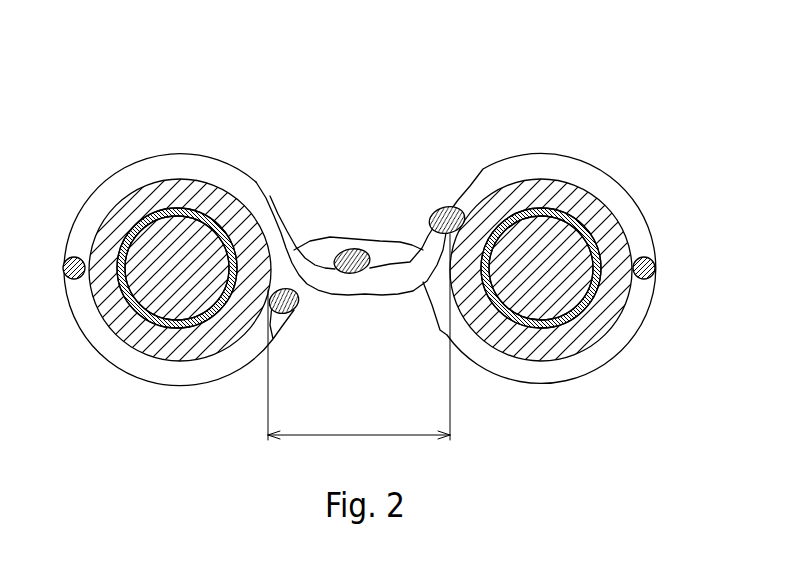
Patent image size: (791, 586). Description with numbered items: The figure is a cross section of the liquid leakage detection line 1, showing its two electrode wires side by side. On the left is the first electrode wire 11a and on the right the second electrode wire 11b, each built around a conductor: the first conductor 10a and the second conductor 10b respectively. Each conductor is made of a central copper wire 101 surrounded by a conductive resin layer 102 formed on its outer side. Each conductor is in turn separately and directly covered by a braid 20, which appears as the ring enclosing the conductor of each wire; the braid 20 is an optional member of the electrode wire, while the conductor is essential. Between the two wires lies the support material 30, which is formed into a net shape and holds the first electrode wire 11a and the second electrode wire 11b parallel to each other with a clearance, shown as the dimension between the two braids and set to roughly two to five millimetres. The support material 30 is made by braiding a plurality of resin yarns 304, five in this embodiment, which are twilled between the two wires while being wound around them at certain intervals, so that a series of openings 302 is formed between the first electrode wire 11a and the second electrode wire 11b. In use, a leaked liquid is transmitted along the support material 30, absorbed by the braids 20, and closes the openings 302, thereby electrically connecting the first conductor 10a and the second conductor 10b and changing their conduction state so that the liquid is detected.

The liquid leakage detection line 1 is at (357, 91).
The first electrode wire 11a is at (68, 63).
The second electrode wire 11b is at (653, 63).
The first conductor 10a is at (232, 107).
The second conductor 10b is at (605, 107).
The copper wire 101 is at (177, 263).
The conductive resin layer 102 is at (203, 210).
The braid 20 is at (90, 240).
The support material 30 is at (418, 182).
The openings 302 is at (321, 267).
The resin yarns 304 is at (393, 252).